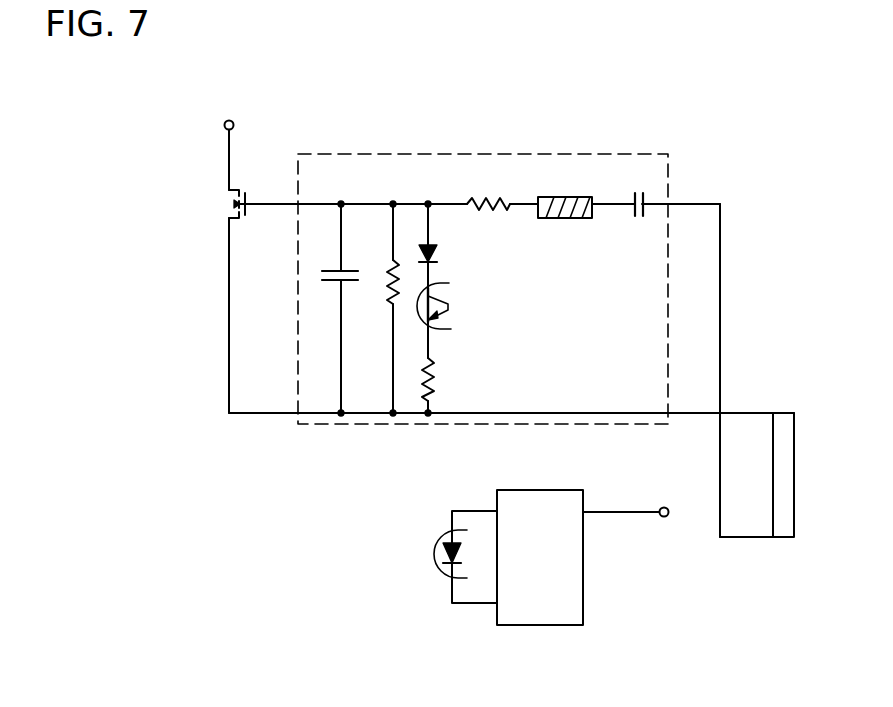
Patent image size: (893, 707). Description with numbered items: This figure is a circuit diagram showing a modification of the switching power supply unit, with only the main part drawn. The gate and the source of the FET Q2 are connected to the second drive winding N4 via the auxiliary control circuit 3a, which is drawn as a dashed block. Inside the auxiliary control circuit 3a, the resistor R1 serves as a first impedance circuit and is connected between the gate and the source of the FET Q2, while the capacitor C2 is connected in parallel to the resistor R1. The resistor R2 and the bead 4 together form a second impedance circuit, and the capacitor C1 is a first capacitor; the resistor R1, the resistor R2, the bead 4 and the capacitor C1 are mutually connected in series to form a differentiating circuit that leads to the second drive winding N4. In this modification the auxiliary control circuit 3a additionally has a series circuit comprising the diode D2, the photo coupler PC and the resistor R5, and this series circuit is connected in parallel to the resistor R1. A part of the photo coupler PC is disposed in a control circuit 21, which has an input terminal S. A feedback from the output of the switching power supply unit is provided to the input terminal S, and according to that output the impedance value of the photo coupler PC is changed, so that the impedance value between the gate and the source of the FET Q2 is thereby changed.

The auxiliary control circuit 3a is at (357, 172).
The FET Q2 is at (217, 204).
The capacitor C2 is at (331, 308).
The resistor R1 is at (379, 308).
The diode D2 is at (445, 247).
The photo coupler PC is at (448, 320).
The resistor R5 is at (444, 385).
The resistor R2 is at (488, 191).
The bead 4 is at (565, 196).
The capacitor C1 is at (637, 194).
The second drive winding N4 is at (772, 475).
The control circuit 21 is at (570, 587).
The input terminal S is at (673, 512).